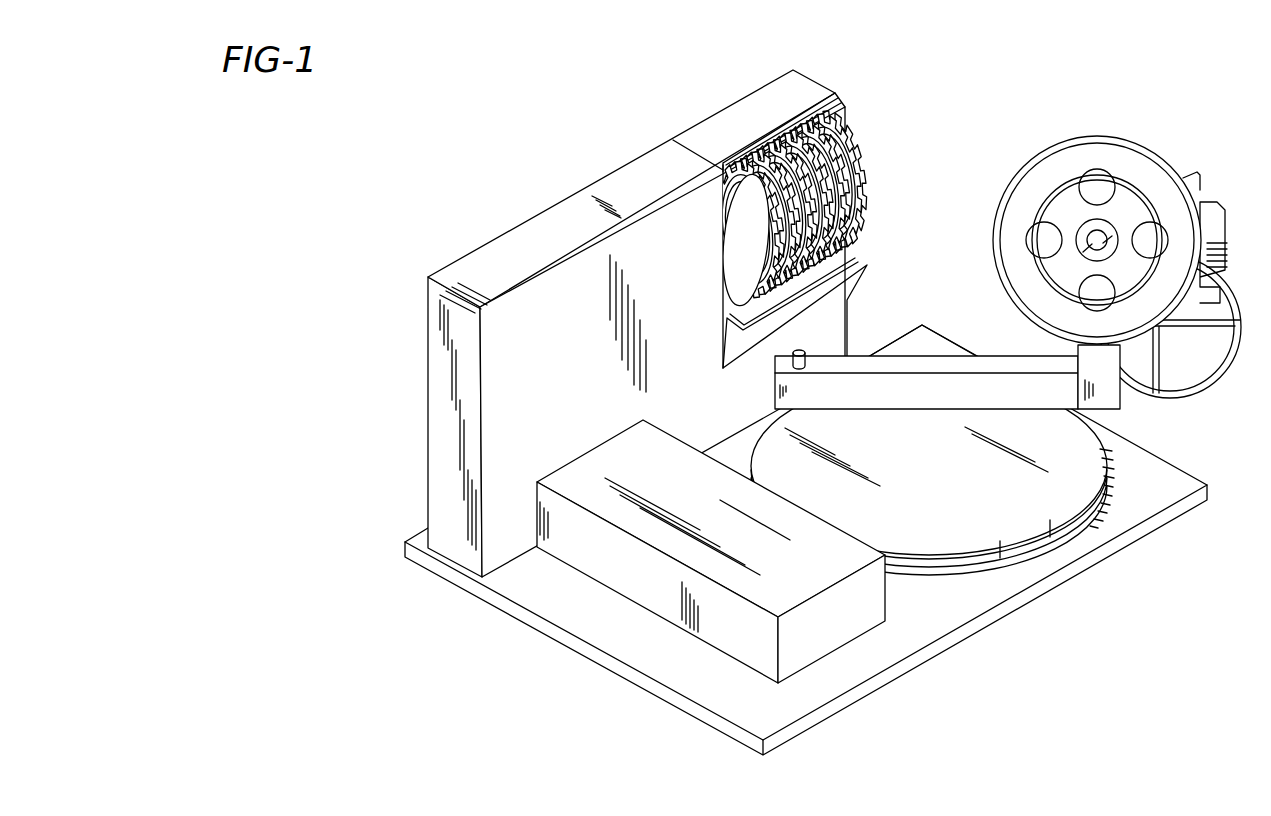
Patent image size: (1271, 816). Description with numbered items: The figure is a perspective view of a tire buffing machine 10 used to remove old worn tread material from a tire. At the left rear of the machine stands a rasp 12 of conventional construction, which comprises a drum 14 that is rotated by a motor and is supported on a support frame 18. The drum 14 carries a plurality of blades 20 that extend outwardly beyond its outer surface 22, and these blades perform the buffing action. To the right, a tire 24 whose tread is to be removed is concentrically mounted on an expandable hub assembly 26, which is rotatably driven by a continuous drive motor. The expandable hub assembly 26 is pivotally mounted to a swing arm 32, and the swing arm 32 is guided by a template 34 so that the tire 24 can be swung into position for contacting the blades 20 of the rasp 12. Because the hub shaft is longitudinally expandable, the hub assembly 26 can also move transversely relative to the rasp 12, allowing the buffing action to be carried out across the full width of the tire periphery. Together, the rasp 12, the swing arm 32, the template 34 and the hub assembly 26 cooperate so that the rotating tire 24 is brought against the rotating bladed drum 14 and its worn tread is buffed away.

The tire buffing machine 10 is at (924, 146).
The rasp 12 is at (697, 306).
The drum 14 is at (737, 259).
The support frame 18 is at (824, 80).
The blades 20 is at (808, 204).
The outer surface 22 is at (880, 208).
The tire 24 is at (1097, 220).
The expandable hub assembly 26 is at (1137, 272).
The swing arm 32 is at (888, 393).
The template 34 is at (1110, 497).